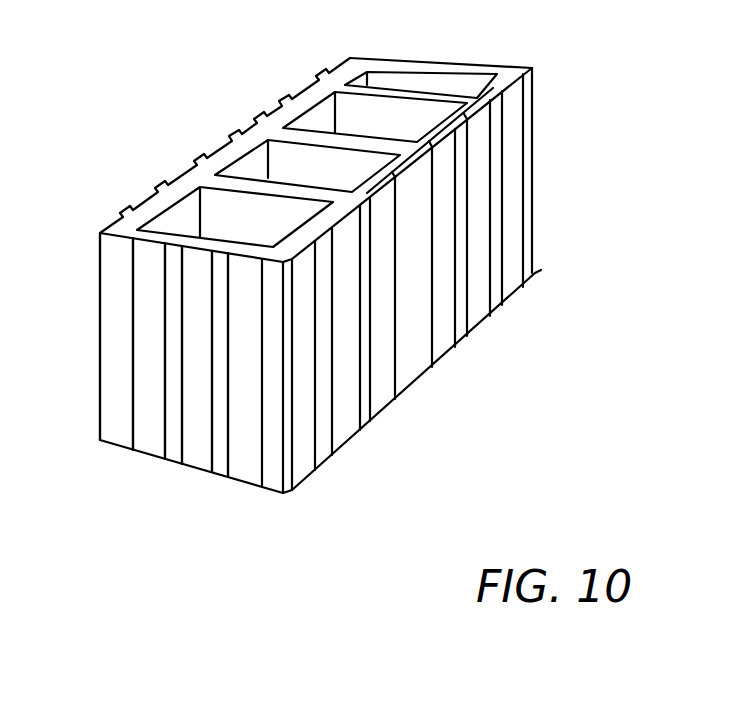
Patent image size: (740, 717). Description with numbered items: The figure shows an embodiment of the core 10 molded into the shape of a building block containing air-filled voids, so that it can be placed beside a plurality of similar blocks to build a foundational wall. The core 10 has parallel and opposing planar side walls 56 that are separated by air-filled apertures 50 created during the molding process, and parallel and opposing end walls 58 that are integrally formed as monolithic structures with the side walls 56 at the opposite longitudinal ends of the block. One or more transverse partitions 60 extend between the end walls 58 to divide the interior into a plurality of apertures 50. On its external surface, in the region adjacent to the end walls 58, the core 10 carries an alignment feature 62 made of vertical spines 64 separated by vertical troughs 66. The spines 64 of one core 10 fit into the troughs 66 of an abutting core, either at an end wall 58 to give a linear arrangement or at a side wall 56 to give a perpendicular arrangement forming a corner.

The core 10 is at (612, 150).
The aperture 50 is at (288, 167).
The side wall 56 is at (237, 138).
The end wall 58 is at (118, 352).
The transverse partition 60 is at (300, 137).
The alignment feature 62 is at (113, 513).
The vertical spine 64 is at (177, 432).
The vertical trough 66 is at (205, 432).